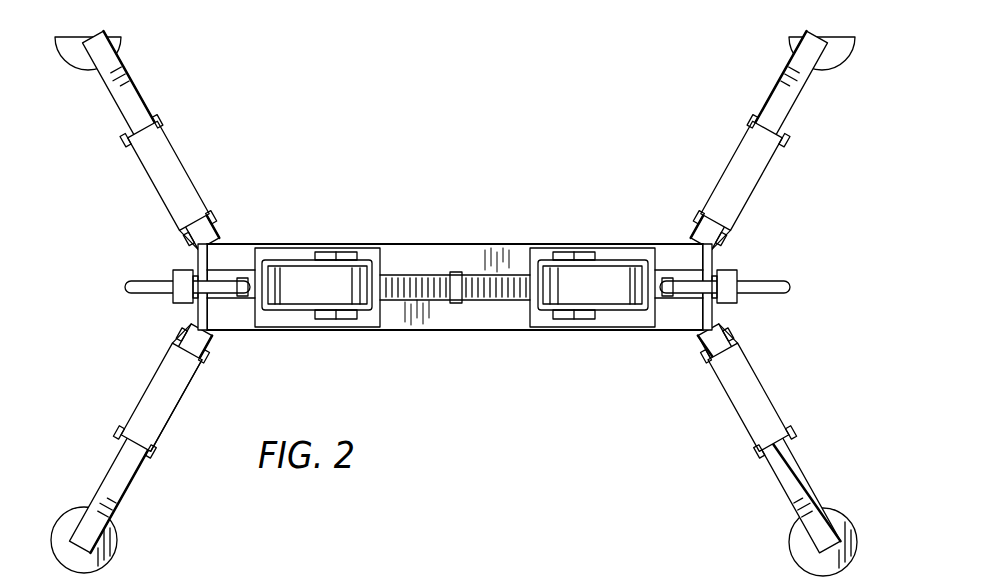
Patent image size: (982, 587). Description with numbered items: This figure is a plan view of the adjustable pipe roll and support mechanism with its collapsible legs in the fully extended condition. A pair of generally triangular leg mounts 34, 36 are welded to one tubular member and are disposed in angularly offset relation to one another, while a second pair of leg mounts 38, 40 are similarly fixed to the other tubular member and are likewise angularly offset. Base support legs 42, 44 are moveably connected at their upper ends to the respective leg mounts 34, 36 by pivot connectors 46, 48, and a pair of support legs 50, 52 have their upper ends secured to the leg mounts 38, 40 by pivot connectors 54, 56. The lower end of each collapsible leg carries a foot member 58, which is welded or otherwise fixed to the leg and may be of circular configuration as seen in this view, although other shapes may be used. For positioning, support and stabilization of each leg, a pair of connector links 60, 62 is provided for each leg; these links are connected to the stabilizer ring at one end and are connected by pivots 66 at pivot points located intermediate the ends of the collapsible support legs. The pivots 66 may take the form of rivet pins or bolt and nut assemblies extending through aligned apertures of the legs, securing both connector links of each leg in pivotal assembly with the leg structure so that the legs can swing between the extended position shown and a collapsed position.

The leg mount 34 is at (186, 248).
The leg mount 36 is at (178, 330).
The leg mount 38 is at (725, 255).
The leg mount 40 is at (724, 326).
The base support leg 42 is at (112, 101).
The base support leg 44 is at (115, 473).
The pivot connector 46 is at (218, 217).
The pivot connector 48 is at (222, 358).
The support leg 50 is at (807, 97).
The support leg 52 is at (786, 435).
The pivot connector 54 is at (695, 213).
The pivot connector 56 is at (697, 361).
The foot member 58 is at (117, 547).
The connector link 60 is at (147, 393).
The connector link 62 is at (188, 403).
The pivot 66 is at (167, 452).